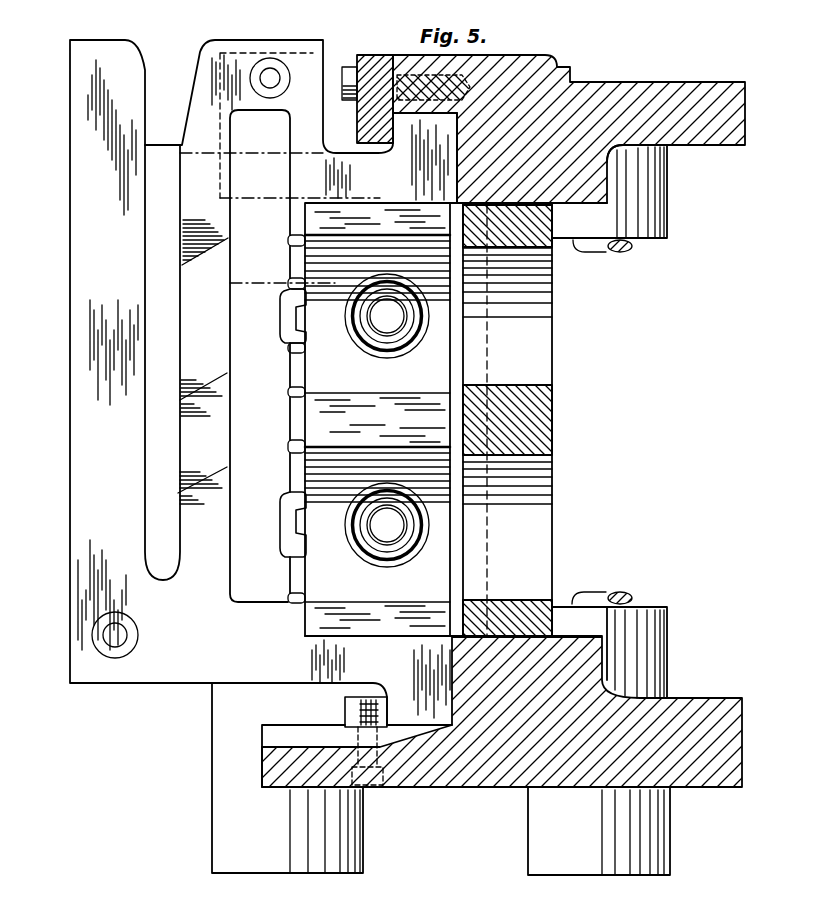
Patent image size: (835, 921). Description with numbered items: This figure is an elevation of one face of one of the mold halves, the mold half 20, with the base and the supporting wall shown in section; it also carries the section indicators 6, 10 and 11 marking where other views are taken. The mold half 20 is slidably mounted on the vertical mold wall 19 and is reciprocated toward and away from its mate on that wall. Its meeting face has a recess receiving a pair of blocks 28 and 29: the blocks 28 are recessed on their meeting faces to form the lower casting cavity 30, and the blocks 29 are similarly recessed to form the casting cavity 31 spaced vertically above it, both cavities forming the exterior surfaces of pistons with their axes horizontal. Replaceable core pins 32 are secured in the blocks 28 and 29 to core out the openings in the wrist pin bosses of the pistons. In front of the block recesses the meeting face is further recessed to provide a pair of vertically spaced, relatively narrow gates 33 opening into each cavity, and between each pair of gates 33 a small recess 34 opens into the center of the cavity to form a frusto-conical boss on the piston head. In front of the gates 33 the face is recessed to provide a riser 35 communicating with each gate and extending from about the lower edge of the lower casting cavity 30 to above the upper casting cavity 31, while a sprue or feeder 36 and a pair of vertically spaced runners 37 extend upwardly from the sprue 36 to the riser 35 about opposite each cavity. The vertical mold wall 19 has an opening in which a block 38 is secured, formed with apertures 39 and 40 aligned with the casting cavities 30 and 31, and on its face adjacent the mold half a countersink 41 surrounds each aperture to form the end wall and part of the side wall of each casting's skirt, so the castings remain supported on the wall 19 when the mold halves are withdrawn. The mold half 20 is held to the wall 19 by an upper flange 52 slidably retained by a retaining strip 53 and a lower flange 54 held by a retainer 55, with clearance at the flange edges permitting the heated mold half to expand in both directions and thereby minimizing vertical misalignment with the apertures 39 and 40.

The section line 6- 6 is at (686, 432).
The section line 10- 10 is at (152, 737).
The section line 11- 11 is at (268, 536).
The vertical mold wall 19 is at (623, 85).
The mold half 20 is at (77, 237).
The block 28 is at (320, 433).
The block 29 is at (408, 400).
The casting cavity 30 is at (435, 553).
The casting cavity 31 is at (427, 355).
The core pin 32 is at (380, 313).
The gate 33 is at (298, 258).
The small recess 34 is at (300, 316).
The riser 35 is at (242, 345).
The sprue 36 is at (163, 443).
The runner 37 is at (200, 280).
The block 38 is at (540, 413).
The aperture 39 is at (553, 488).
The aperture 40 is at (545, 277).
The countersink 41 is at (457, 350).
The upper flange 52 is at (413, 127).
The retaining strip 53 is at (376, 60).
The lower flange 54 is at (398, 710).
The retainer 55 is at (345, 705).